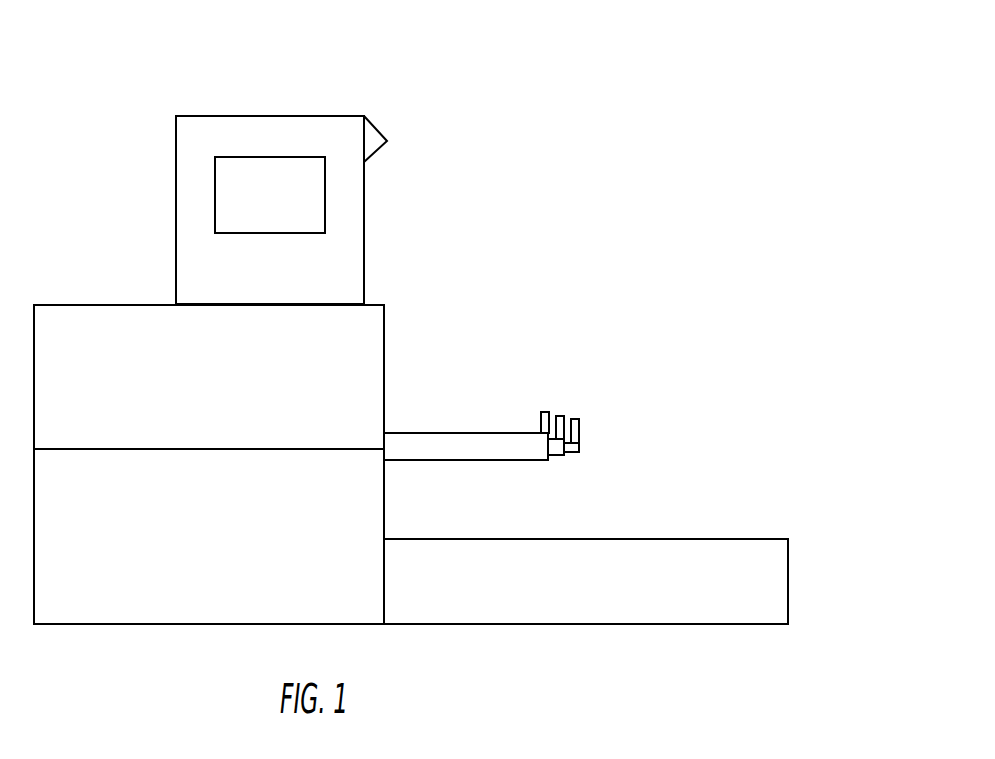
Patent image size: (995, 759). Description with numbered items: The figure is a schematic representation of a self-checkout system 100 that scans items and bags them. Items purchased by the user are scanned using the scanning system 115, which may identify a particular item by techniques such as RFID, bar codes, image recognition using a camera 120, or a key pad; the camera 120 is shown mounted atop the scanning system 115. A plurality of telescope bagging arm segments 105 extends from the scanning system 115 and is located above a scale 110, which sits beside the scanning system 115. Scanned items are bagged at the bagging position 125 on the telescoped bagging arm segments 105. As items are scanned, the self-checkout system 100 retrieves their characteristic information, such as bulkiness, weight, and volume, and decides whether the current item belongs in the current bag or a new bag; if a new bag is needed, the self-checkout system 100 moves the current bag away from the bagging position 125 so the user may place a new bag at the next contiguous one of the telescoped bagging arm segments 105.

The self-checkout system 100 is at (678, 58).
The telescope bagging arm segments 105 is at (622, 331).
The scale 110 is at (626, 597).
The scanning system 115 is at (222, 563).
The camera 120 is at (387, 141).
The bagging position 125 is at (525, 500).